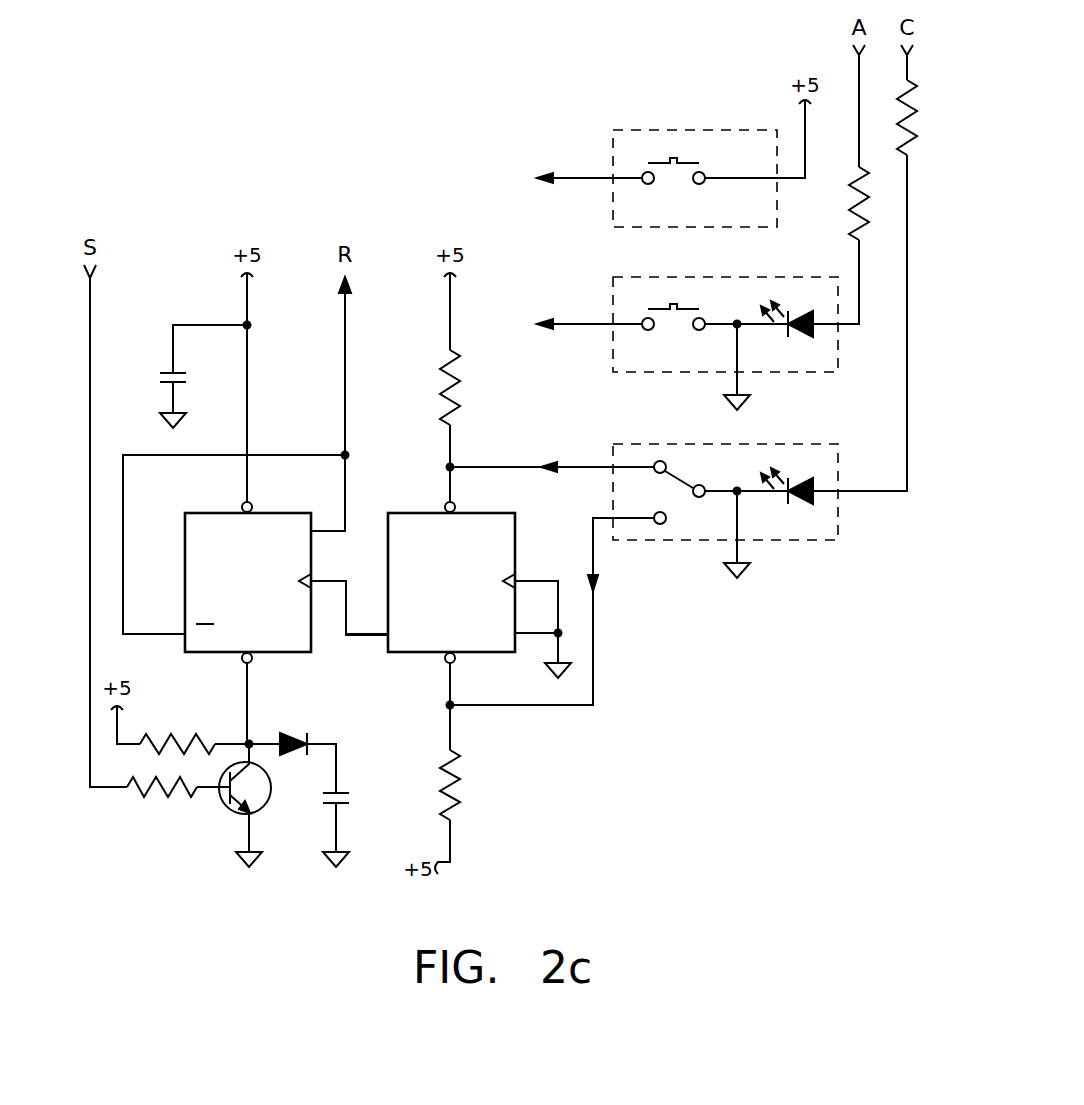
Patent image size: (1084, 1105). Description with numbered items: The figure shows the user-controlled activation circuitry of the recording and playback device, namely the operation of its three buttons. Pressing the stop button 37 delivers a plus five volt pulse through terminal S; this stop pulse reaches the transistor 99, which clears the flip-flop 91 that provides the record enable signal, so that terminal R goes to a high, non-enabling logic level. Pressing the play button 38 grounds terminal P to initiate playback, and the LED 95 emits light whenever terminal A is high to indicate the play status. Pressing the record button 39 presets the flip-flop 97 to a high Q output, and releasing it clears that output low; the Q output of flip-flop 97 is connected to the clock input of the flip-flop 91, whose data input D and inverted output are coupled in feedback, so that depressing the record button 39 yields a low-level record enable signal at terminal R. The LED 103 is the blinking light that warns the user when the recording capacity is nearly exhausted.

The stop button 37 is at (617, 128).
The play button 38 is at (617, 275).
The record button 39 is at (617, 443).
The flip-flop 91 is at (196, 512).
The LED 95 is at (800, 312).
The flip-flop 97 is at (405, 512).
The transistor 99 is at (268, 806).
The LED 103 is at (800, 480).